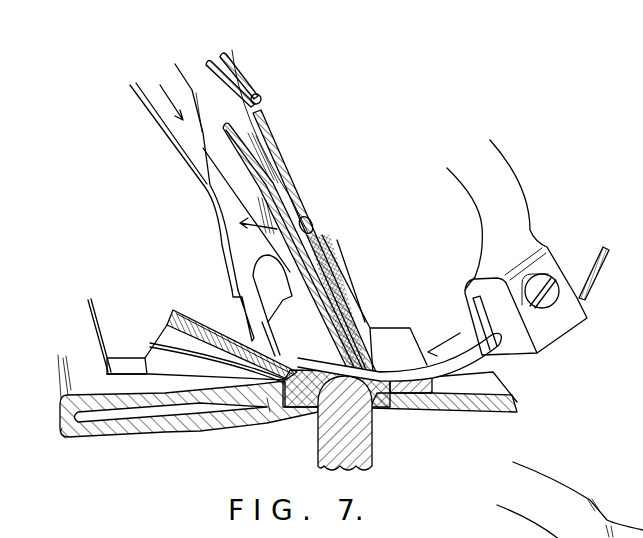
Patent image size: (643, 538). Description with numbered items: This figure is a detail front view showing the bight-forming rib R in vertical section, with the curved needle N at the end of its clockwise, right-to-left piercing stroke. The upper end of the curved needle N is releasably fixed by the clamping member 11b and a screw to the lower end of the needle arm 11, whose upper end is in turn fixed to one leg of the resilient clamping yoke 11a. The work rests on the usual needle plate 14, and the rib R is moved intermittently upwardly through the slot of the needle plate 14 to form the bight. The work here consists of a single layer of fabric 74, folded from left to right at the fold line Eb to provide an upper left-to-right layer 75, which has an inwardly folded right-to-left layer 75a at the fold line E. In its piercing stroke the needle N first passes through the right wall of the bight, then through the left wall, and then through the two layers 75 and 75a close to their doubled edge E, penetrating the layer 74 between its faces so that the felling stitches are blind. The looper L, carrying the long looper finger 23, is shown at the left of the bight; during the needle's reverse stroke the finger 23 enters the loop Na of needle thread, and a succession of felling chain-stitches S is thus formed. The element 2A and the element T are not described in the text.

The looper L is at (225, 243).
The long looper finger 23 is at (248, 318).
The felling chain-stitches S is at (261, 100).
The hook 2A is at (278, 313).
The loop of needle thread Na is at (270, 353).
The fold line E is at (352, 350).
The curved needle N is at (478, 343).
The needle arm 11 is at (517, 200).
The tool T is at (598, 260).
The resilient clamping yoke 11a is at (545, 344).
The clamping member 11b is at (550, 302).
The needle plate 14 is at (110, 332).
The upper left-to-right layer 75 is at (105, 378).
The single layer of fabric 74 is at (158, 432).
The fold line Eb is at (64, 434).
The inwardly folded right-to-left layer 75a is at (270, 412).
The rib R is at (372, 448).